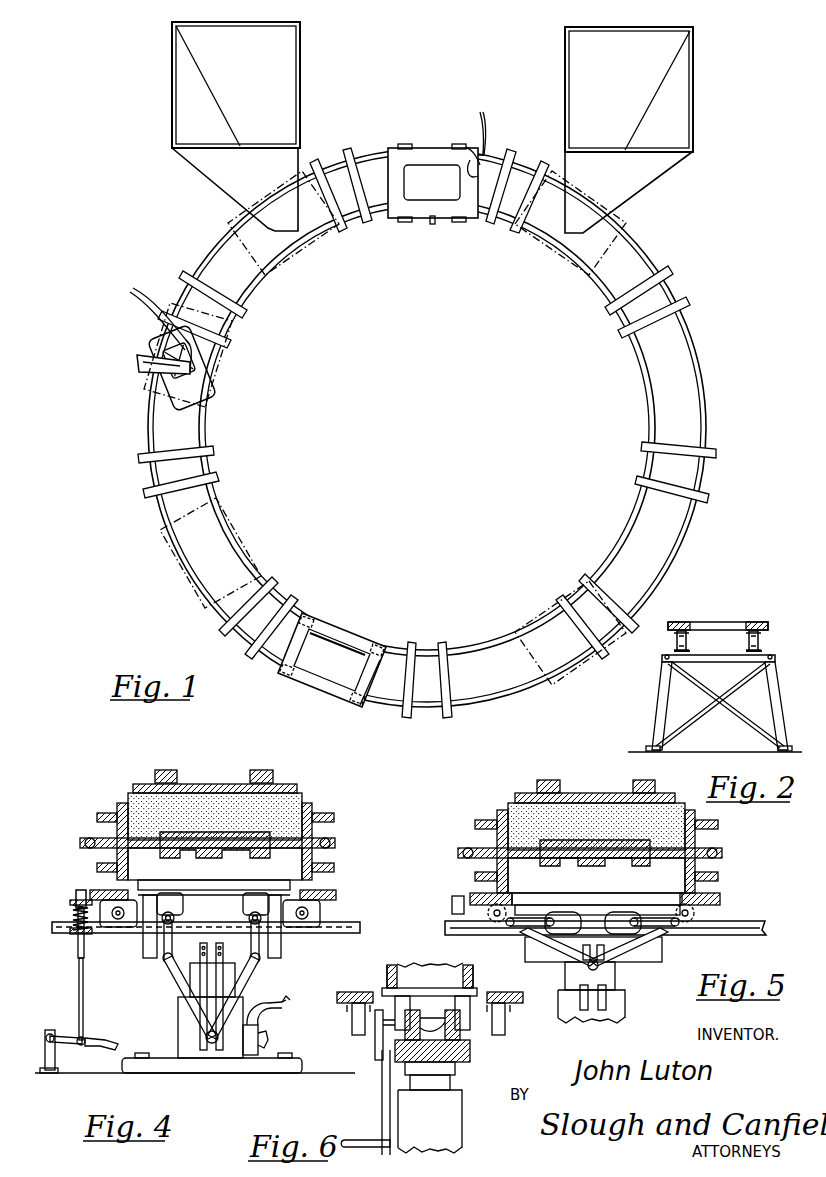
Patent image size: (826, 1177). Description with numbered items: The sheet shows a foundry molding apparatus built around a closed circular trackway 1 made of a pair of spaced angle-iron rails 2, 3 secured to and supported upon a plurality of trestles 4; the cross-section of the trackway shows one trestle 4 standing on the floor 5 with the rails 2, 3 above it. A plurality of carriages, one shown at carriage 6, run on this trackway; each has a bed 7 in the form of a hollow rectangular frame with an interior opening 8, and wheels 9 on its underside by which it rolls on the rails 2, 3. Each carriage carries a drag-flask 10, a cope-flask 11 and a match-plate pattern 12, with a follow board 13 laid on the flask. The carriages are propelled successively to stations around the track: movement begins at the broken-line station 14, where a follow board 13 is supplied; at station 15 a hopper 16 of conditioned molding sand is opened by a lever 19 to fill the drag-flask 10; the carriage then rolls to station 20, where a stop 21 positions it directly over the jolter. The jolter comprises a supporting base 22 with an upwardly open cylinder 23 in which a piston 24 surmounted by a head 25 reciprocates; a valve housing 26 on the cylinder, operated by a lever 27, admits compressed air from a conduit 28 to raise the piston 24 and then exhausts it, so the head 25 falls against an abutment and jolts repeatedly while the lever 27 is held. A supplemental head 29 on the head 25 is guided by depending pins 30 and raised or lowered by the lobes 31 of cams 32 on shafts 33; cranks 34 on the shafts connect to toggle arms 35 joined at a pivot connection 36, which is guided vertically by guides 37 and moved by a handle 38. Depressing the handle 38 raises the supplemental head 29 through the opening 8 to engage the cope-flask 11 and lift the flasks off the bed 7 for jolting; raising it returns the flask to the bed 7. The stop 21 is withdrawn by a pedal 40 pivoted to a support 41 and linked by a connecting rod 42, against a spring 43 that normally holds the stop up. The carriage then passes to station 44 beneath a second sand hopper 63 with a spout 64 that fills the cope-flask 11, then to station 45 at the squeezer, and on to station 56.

In FIG. 1, the trackway 1 is at (708, 418).
In FIG. 1, the rail 2 is at (690, 352).
In FIG. 2, the rail 2 is at (764, 652).
In FIG. 5, the rail 2 is at (760, 920).
In FIG. 1, the rail 3 is at (652, 383).
In FIG. 2, the rail 3 is at (672, 651).
In FIG. 1, the trestle 4 is at (716, 453).
In FIG. 2, the trestle 4 is at (781, 700).
In FIG. 1, the floor 5 is at (522, 275).
In FIG. 2, the floor 5 is at (712, 750).
In FIG. 4, the floor 5 is at (318, 1073).
In FIG. 1, the carriage 6 is at (370, 627).
In FIG. 2, the carriage 6 is at (740, 622).
In FIG. 4, the carriage 6 is at (360, 907).
In FIG. 1, the bed 7 is at (368, 680).
In FIG. 2, the bed 7 is at (760, 622).
In FIG. 4, the bed 7 is at (336, 894).
In FIG. 5, the bed 7 is at (720, 896).
In FIG. 1, the opening 8 is at (305, 652).
In FIG. 2, the opening 8 is at (700, 622).
In FIG. 5, the opening 8 is at (668, 893).
In FIG. 1, the wheel 9 is at (310, 614).
In FIG. 2, the wheel 9 is at (676, 640).
In FIG. 5, the wheel 9 is at (494, 922).
In FIG. 1, the drag-flask 10 is at (258, 500).
In FIG. 4, the drag-flask 10 is at (117, 803).
In FIG. 5, the drag-flask 10 is at (497, 814).
In FIG. 1, the cope-flask 11 is at (318, 285).
In FIG. 4, the cope-flask 11 is at (128, 868).
In FIG. 5, the cope-flask 11 is at (508, 880).
In FIG. 6, the cope-flask 11 is at (473, 972).
In FIG. 1, the match-plate pattern 12 is at (495, 597).
In FIG. 5, the follow board 13 is at (587, 795).
In FIG. 1, the station 14 is at (520, 690).
In FIG. 1, the station 15 is at (630, 225).
In FIG. 1, the hopper 16 is at (693, 130).
In FIG. 1, the lever 19 is at (575, 226).
In FIG. 1, the station 20 is at (470, 147).
In FIG. 4, the stop 21 is at (76, 898).
In FIG. 5, the stop 21 is at (452, 900).
In FIG. 4, the supporting base 22 is at (188, 1070).
In FIG. 4, the cylinder 23 is at (178, 1035).
In FIG. 4, the piston 24 is at (235, 975).
In FIG. 4, the head 25 is at (281, 942).
In FIG. 4, the valve housing 26 is at (250, 1055).
In FIG. 4, the lever 27 is at (268, 1038).
In FIG. 4, the conduit 28 is at (286, 1000).
In FIG. 1, the supplemental head 29 is at (433, 184).
In FIG. 4, the supplemental head 29 is at (217, 880).
In FIG. 5, the supplemental head 29 is at (598, 905).
In FIG. 6, the supplemental head 29 is at (477, 992).
In FIG. 4, the depending pin 30 is at (150, 898).
In FIG. 4, the lobe 31 is at (173, 895).
In FIG. 4, the cam 32 is at (174, 918).
In FIG. 5, the cam 32 is at (618, 923).
In FIG. 4, the shaft 33 is at (212, 926).
In FIG. 6, the shaft 33 is at (435, 1040).
In FIG. 4, the crank 34 is at (164, 945).
In FIG. 6, the crank 34 is at (375, 1048).
In FIG. 4, the toggle arm 35 is at (178, 980).
In FIG. 6, the toggle arm 35 is at (382, 1100).
In FIG. 4, the pivot connection 36 is at (212, 1043).
In FIG. 5, the pivot connection 36 is at (598, 968).
In FIG. 4, the guide 37 is at (216, 1005).
In FIG. 6, the handle 38 is at (355, 1138).
In FIG. 4, the pedal 40 is at (108, 1038).
In FIG. 4, the support 41 is at (50, 1030).
In FIG. 4, the connecting rod 42 is at (83, 996).
In FIG. 4, the spring 43 is at (72, 916).
In FIG. 1, the station 44 is at (240, 217).
In FIG. 1, the station 45 is at (159, 355).
In FIG. 1, the station 56 is at (178, 570).
In FIG. 1, the sand hopper 63 is at (172, 104).
In FIG. 1, the spout 64 is at (280, 226).